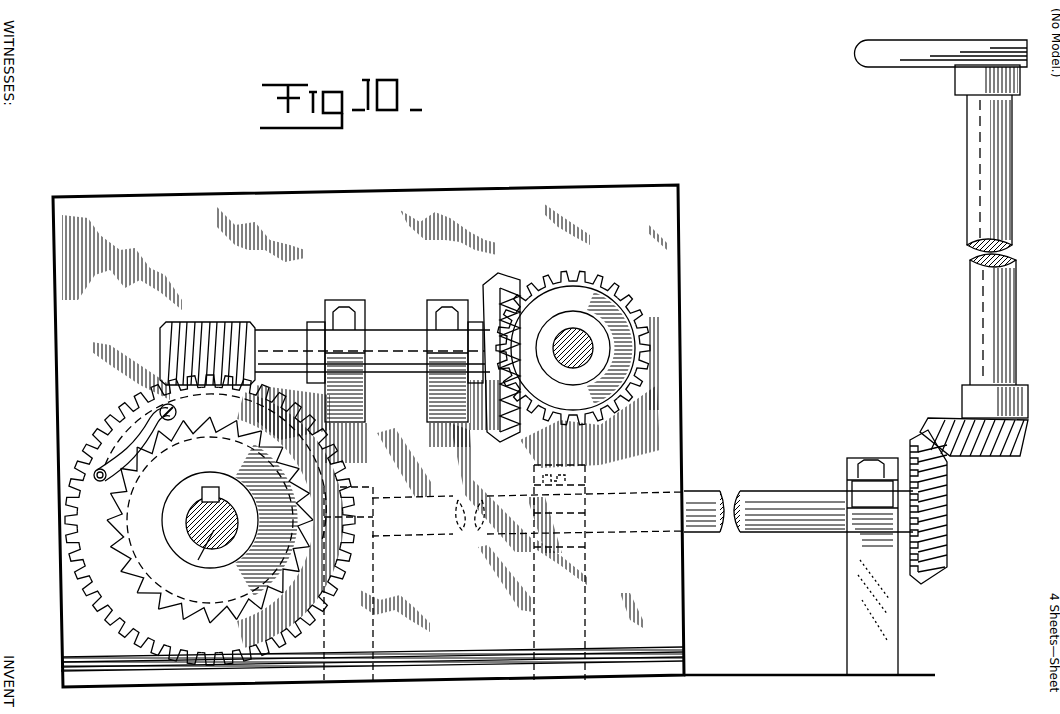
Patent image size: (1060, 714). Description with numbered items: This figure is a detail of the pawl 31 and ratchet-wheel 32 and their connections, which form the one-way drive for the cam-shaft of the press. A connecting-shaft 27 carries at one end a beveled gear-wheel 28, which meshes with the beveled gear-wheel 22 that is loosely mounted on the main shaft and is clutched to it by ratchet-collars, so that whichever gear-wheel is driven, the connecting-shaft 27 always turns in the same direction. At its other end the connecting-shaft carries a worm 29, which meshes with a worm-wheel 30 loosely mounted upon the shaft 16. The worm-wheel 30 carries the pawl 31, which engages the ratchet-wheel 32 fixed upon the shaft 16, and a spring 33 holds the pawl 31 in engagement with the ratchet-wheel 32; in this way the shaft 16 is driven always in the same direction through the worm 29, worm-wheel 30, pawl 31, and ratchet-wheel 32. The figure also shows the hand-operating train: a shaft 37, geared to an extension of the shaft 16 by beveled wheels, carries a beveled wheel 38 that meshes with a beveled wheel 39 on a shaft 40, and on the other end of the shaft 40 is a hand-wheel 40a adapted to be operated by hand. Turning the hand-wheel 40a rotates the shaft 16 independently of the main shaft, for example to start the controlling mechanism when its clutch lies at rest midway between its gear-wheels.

The shaft 16 is at (198, 560).
The beveled gear-wheel 22 is at (608, 284).
The connecting-shaft 27 is at (283, 340).
The beveled gear-wheel 28 is at (498, 282).
The worm 29 is at (214, 327).
The worm-wheel 30 is at (133, 405).
The pawl 31 is at (147, 427).
The ratchet-wheel 32 is at (163, 529).
The spring 33 is at (110, 458).
The shaft 37 is at (432, 538).
The beveled wheel 38 is at (947, 520).
The beveled wheel 39 is at (1021, 441).
The shaft 40 is at (968, 192).
The hand-wheel 40a is at (884, 48).